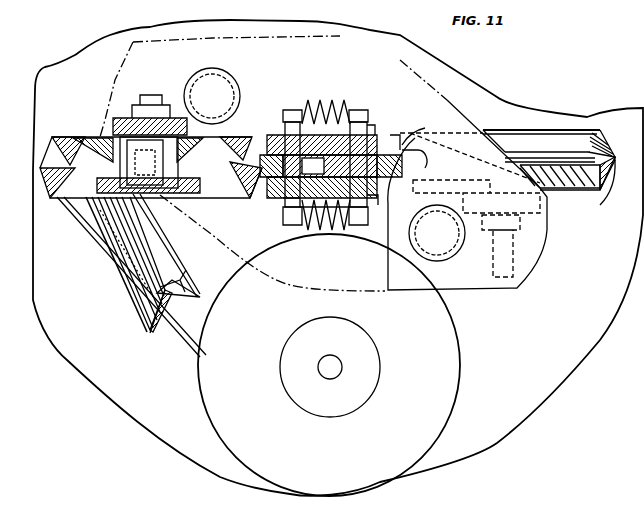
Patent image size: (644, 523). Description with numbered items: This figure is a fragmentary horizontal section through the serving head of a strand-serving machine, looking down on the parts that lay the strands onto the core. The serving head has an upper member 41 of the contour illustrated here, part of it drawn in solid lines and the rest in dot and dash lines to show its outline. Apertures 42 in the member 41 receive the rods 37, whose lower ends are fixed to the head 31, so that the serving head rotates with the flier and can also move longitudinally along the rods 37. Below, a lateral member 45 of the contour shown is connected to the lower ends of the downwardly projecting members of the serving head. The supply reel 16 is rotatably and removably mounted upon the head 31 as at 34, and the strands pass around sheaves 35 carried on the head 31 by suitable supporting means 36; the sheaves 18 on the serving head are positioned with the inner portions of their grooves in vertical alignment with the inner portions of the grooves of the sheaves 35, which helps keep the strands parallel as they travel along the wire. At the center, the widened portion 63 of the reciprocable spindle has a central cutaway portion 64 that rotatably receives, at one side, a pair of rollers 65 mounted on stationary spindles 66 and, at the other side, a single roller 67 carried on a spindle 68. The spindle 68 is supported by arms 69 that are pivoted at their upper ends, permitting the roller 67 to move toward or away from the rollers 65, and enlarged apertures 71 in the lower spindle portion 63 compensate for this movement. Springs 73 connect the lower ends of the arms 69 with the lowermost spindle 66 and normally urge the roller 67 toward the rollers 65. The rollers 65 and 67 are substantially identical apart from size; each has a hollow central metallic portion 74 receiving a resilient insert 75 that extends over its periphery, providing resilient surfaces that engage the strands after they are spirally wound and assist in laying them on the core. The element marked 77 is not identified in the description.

The supply reel 16 is at (452, 410).
The sheave 18 is at (80, 140).
The head 31 is at (462, 455).
The mounting of supply reels 34 is at (336, 373).
The sheave 35 is at (135, 300).
The supporting means 36 is at (178, 228).
The rod 37 is at (192, 88).
The upper member 41 is at (480, 290).
The aperture 42 is at (218, 68).
The lateral member 45 is at (396, 130).
The widened portion of spindle 63 is at (284, 192).
The central cutaway portion 64 is at (300, 228).
The roller 65 is at (273, 157).
The stationary spindle 66 is at (287, 138).
The roller 67 is at (418, 168).
The spindle 68 is at (376, 128).
The arm 69 is at (375, 112).
The enlarged aperture 71 is at (404, 138).
The spring 73 is at (320, 110).
The central metallic portion 74 is at (272, 182).
The resilient insert 75 is at (262, 168).
The washer 77 is at (374, 192).